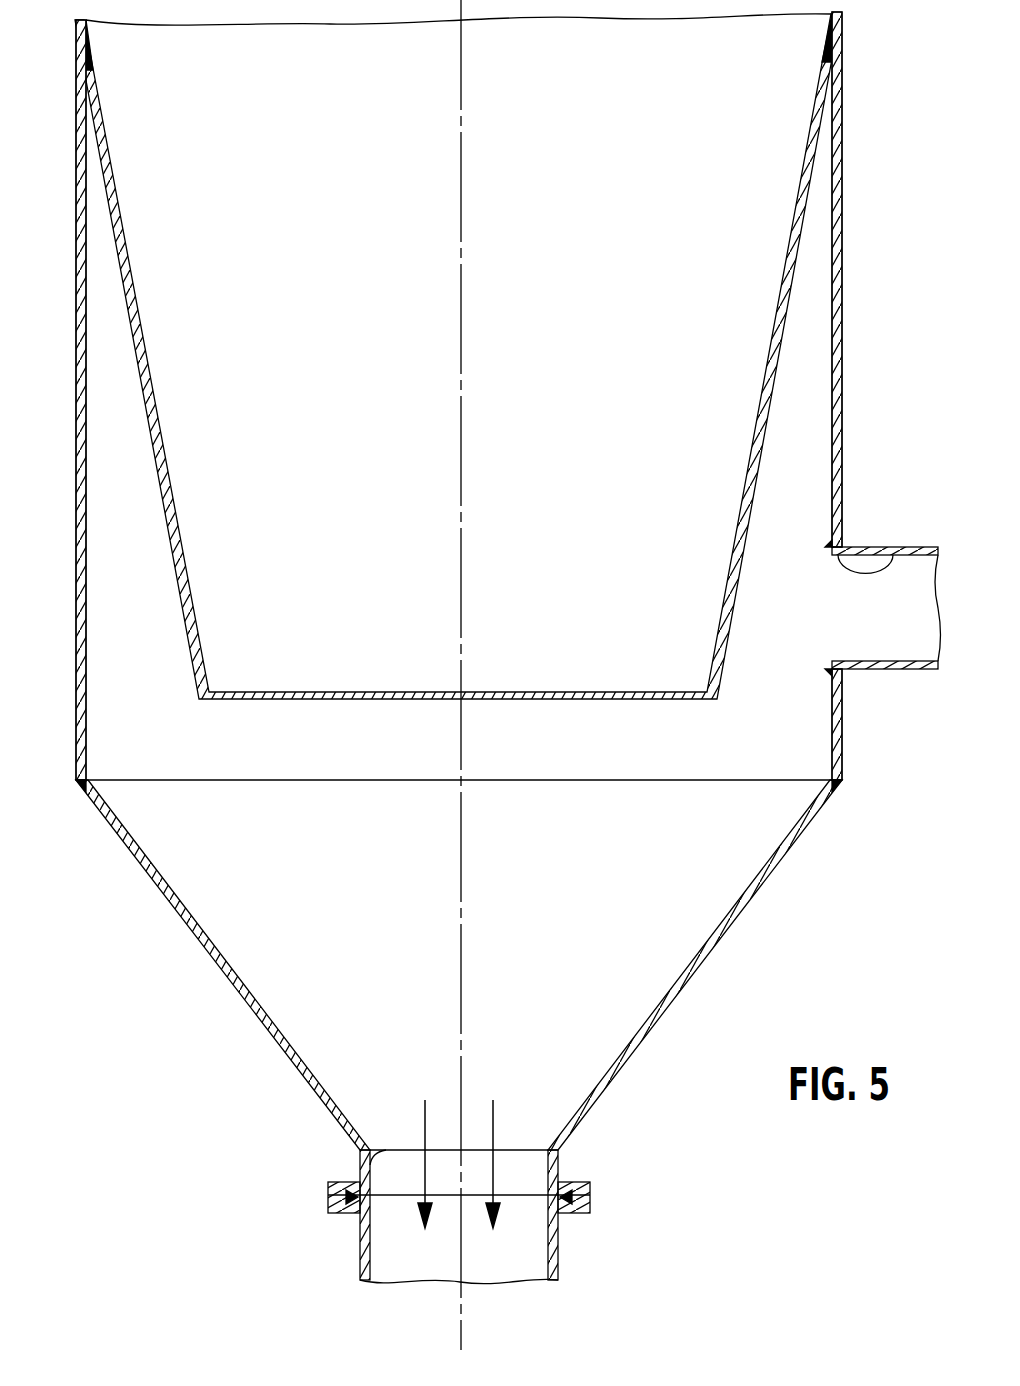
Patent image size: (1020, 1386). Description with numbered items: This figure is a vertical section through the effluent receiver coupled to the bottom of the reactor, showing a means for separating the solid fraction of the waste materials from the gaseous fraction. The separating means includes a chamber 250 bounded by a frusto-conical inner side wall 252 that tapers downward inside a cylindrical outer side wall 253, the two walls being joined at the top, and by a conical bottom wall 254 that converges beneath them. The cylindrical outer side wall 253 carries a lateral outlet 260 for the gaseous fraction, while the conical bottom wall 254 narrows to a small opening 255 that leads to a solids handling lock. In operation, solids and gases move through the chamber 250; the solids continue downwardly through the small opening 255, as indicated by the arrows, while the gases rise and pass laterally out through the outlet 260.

The chamber 250 is at (574, 364).
The frusto-conical inner side wall 252 is at (742, 484).
The cylindrical outer side wall 253 is at (844, 490).
The conical bottom wall 254 is at (684, 985).
The small opening 255 is at (365, 1168).
The outlet 260 is at (893, 548).